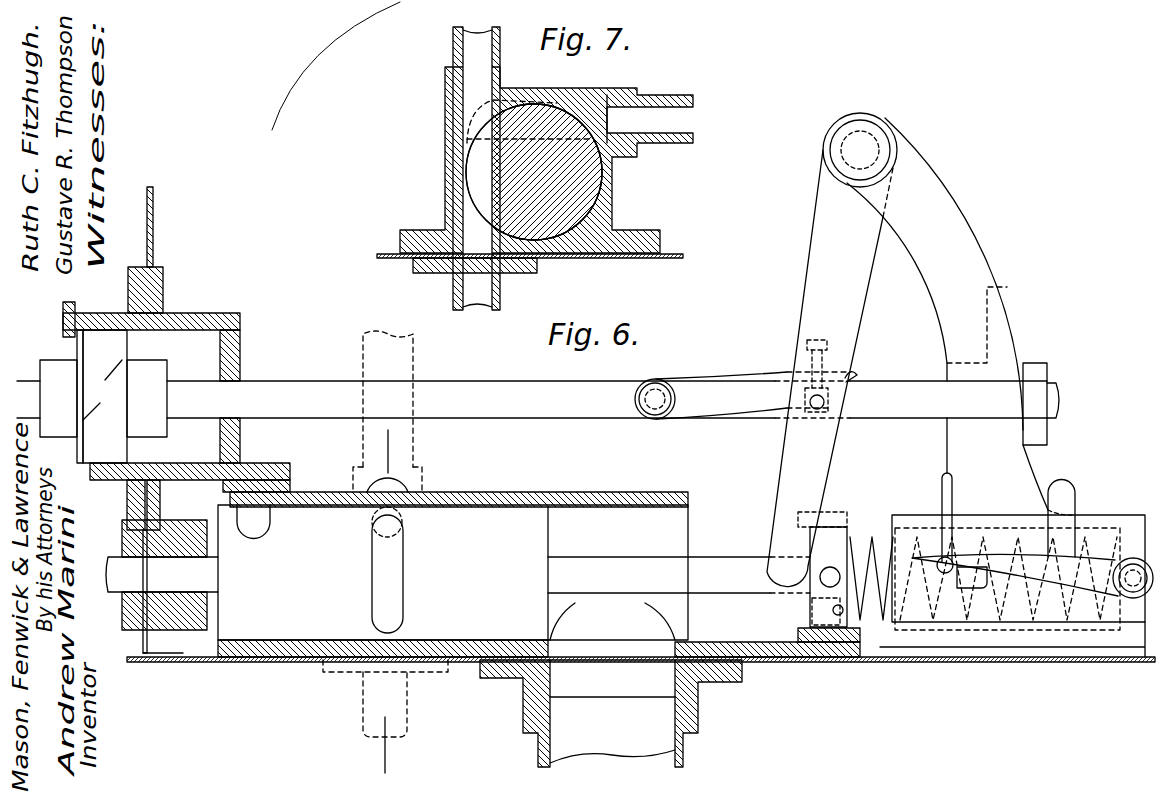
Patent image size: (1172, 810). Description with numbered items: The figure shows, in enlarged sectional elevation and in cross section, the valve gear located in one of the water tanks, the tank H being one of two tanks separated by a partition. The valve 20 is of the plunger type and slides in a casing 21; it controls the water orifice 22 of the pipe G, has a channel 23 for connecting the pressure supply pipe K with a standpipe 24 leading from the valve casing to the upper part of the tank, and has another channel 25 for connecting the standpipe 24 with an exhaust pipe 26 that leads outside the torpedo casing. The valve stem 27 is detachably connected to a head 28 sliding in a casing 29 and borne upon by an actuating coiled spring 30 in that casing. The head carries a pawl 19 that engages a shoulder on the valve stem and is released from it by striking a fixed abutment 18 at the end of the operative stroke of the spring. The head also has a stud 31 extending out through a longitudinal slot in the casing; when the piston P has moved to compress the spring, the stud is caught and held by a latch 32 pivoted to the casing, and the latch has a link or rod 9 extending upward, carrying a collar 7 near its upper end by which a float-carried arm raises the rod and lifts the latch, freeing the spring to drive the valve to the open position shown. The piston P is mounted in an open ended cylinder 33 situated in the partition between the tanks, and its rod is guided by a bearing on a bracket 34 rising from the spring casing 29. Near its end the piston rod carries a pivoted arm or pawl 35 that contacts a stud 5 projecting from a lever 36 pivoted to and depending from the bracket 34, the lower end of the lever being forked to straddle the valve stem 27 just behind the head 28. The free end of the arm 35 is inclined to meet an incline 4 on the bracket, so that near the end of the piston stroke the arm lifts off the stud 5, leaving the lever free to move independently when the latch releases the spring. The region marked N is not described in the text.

In FIG. 6, the incline 4 is at (940, 374).
In FIG. 6, the stud 5 is at (824, 402).
In FIG. 6, the collar 7 is at (395, 748).
In FIG. 6, the link or rod 9 is at (952, 480).
In FIG. 6, the fixed abutment 18 is at (850, 634).
In FIG. 6, the pawl 19 is at (812, 605).
In FIG. 7, the valve 20 is at (604, 178).
In FIG. 6, the valve 20 is at (539, 581).
In FIG. 7, the casing 21 is at (613, 212).
In FIG. 6, the casing 21 is at (605, 485).
In FIG. 6, the water orifice 22 is at (612, 631).
In FIG. 7, the channel 23 is at (472, 170).
In FIG. 6, the channel 23 is at (387, 574).
In FIG. 7, the standpipe 24 is at (453, 48).
In FIG. 6, the standpipe 24 is at (413, 352).
In FIG. 7, the channel 25 is at (467, 146).
In FIG. 6, the channel 25 is at (268, 522).
In FIG. 7, the exhaust pipe 26 is at (660, 95).
In FIG. 6, the exhaust pipe 26 is at (403, 520).
In FIG. 6, the valve stem 27 is at (458, 575).
In FIG. 6, the head 28 is at (830, 520).
In FIG. 6, the casing 29 is at (905, 515).
In FIG. 6, the actuating coiled spring 30 is at (1020, 540).
In FIG. 6, the stud 31 is at (830, 567).
In FIG. 6, the latch 32 is at (965, 548).
In FIG. 6, the open ended cylinder 33 is at (240, 313).
In FIG. 6, the bracket 34 is at (961, 316).
In FIG. 6, the pivoted arm or pawl 35 is at (790, 374).
In FIG. 6, the lever 36 is at (832, 350).
In FIG. 7, the pressure supply pipe K is at (463, 290).
In FIG. 6, the pressure supply pipe K is at (385, 698).
In FIG. 6, the piston P is at (110, 346).
In FIG. 6, the chamber N is at (705, 471).
In FIG. 6, the pipe G is at (611, 713).
In FIG. 6, the tank H is at (930, 664).